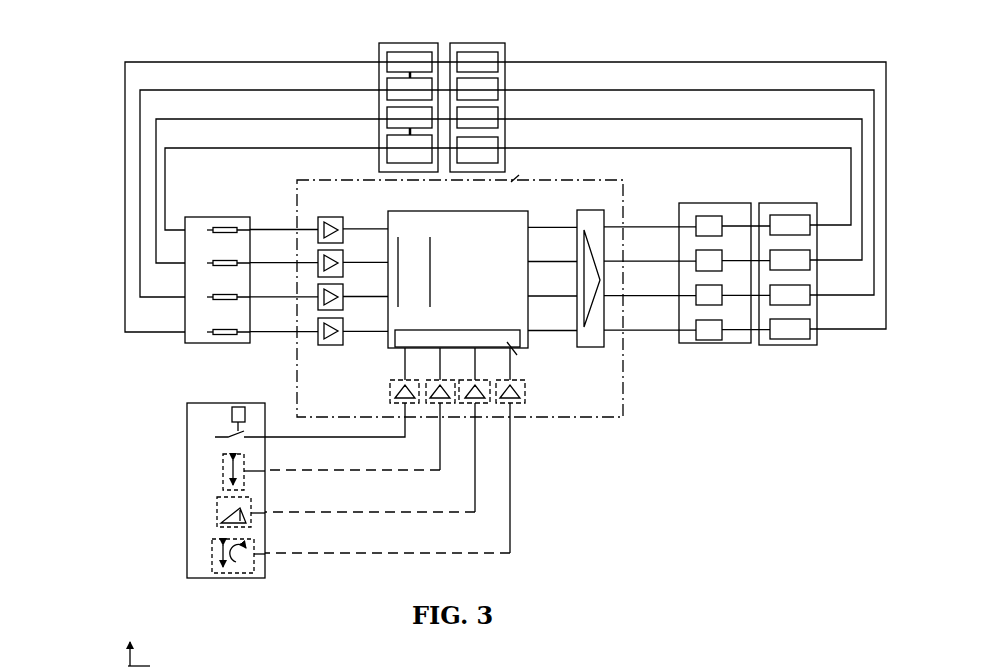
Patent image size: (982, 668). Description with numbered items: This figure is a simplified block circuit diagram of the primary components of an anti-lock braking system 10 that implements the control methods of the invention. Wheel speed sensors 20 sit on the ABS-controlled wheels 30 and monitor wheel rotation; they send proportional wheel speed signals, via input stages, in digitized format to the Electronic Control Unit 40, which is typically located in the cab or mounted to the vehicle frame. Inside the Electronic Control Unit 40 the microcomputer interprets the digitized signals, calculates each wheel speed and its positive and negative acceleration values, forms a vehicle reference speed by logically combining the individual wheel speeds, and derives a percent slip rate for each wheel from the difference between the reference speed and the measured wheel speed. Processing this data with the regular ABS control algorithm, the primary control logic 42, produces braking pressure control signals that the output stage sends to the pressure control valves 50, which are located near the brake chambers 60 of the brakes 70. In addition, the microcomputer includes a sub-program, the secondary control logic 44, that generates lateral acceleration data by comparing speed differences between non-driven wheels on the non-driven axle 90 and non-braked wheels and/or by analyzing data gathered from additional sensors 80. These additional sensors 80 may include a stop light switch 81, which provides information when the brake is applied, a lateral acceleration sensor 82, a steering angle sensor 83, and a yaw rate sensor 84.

The anti-lock braking system 10 is at (78, 241).
The wheel speed sensors 20 is at (237, 344).
The ABS-controlled wheels 30 is at (375, 90).
The Electronic Control Unit 40 is at (460, 308).
The primary control logic 42 is at (387, 347).
The secondary control logic 44 is at (412, 350).
The pressure control valves 50 is at (706, 348).
The brake chambers 60 is at (779, 348).
The brakes 70 is at (472, 42).
The additional sensors 80 is at (203, 510).
The stop light switch 81 is at (232, 412).
The lateral acceleration sensor 82 is at (223, 460).
The steering angle sensor 83 is at (217, 500).
The yaw rate sensor 84 is at (212, 545).
The non-driven axle 90 is at (407, 133).